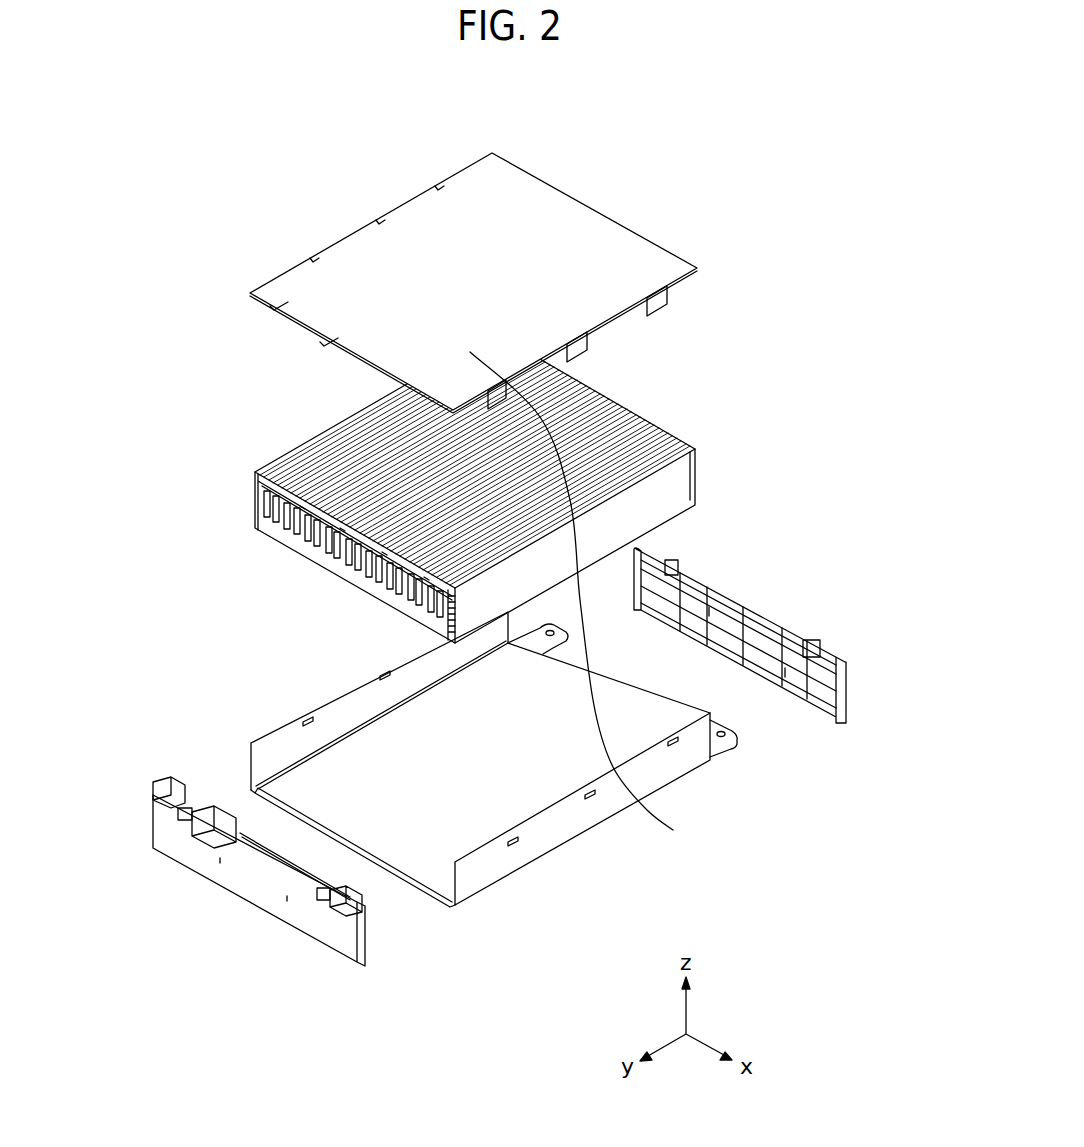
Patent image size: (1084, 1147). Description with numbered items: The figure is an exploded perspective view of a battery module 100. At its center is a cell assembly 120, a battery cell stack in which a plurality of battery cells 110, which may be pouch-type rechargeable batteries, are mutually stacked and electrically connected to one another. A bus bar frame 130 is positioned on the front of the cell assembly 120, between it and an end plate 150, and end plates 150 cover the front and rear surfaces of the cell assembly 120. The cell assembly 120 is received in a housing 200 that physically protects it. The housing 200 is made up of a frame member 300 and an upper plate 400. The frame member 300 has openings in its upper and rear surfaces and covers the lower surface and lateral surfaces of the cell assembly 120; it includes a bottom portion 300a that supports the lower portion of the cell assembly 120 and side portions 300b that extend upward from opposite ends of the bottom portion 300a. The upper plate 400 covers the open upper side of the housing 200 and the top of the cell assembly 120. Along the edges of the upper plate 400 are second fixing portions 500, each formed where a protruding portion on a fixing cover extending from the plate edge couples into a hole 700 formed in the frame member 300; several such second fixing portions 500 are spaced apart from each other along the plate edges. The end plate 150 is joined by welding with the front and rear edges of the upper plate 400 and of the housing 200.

The battery module 100 is at (653, 135).
The battery cell 110 is at (665, 490).
The cell assembly 120 is at (463, 488).
The bus bar frame 130 is at (255, 492).
The end plate 150 is at (786, 627).
The housing 200 is at (468, 801).
The frame member 300 is at (468, 801).
The bottom portion 300a is at (427, 863).
The side portion 300b is at (275, 744).
The upper plate 400 is at (591, 602).
The second fixing portion 500 is at (585, 352).
The hole 700 is at (513, 843).